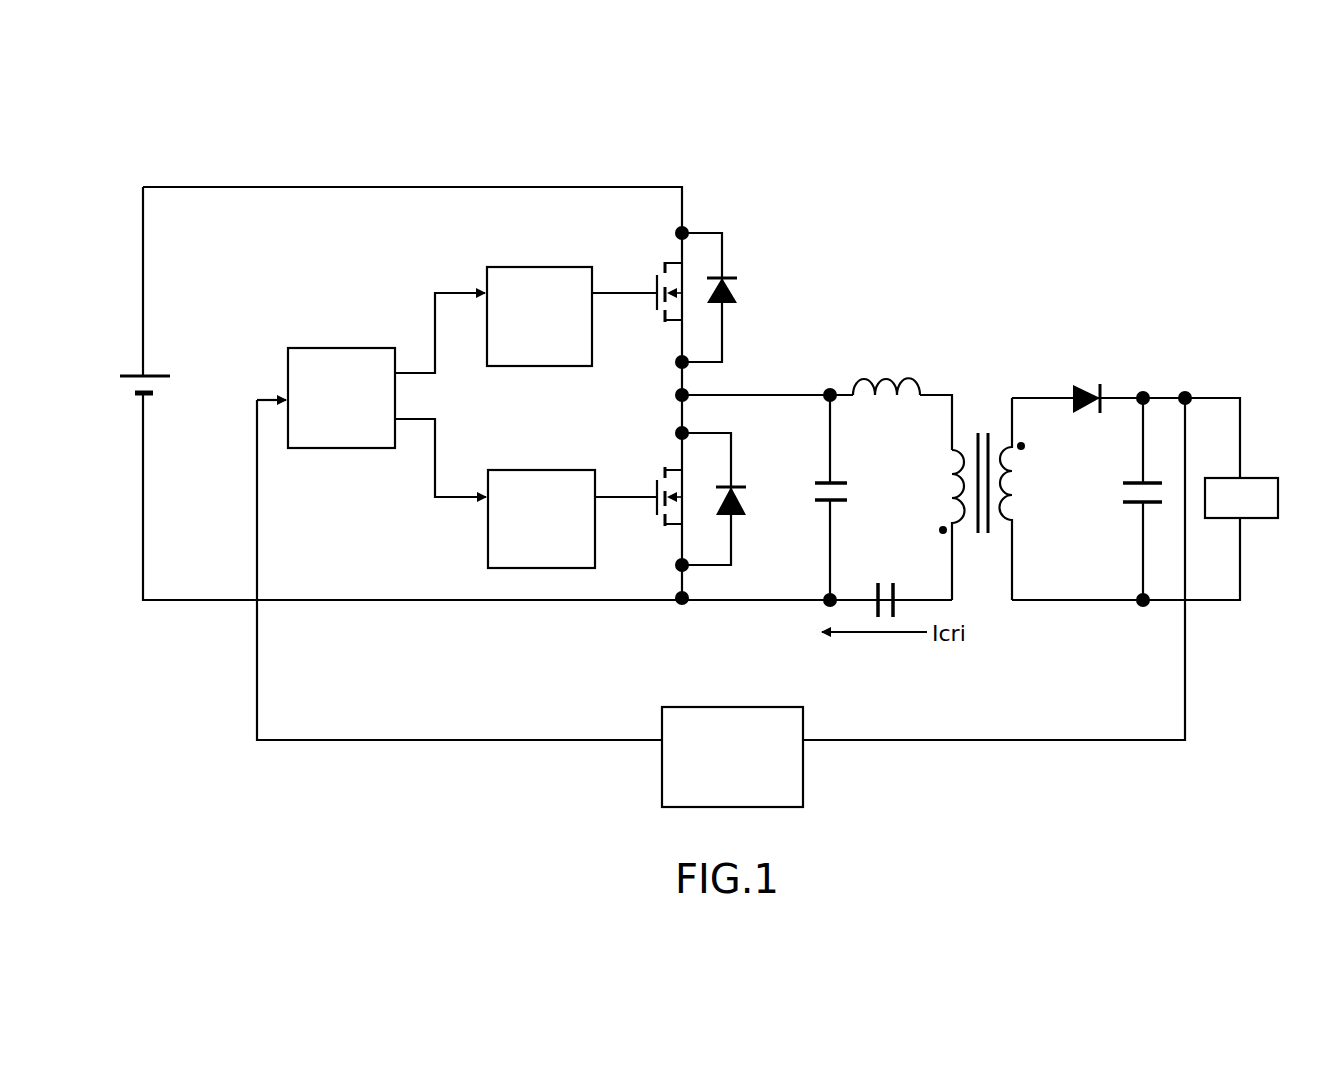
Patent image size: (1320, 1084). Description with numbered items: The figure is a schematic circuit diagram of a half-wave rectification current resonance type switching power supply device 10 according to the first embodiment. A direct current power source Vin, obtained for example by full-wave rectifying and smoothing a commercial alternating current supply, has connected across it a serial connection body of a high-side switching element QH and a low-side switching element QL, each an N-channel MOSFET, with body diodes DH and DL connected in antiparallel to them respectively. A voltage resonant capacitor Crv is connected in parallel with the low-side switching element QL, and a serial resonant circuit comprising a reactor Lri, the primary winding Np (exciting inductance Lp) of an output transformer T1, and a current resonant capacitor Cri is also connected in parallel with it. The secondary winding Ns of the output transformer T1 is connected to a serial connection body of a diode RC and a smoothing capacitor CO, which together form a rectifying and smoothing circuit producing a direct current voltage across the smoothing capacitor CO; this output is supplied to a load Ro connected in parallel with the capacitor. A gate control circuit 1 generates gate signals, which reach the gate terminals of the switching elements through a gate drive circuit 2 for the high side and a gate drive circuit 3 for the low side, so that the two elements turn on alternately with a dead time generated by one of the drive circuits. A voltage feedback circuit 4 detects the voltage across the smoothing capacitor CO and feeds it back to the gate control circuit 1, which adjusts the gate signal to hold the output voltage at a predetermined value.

The gate control circuit 1 is at (338, 348).
The gate drive circuit 2 is at (526, 267).
The gate drive circuit 3 is at (531, 470).
The voltage feedback circuit 4 is at (730, 707).
The half-wave rectification current resonance type switching power supply device 10 is at (1020, 227).
The direct current power source Vin is at (170, 376).
The high-side switching element QH is at (658, 326).
The low-side switching element QL is at (658, 532).
The body diode DH is at (732, 278).
The body diode DL is at (738, 487).
The reactor Lri is at (870, 380).
The voltage resonant capacitor Crv is at (842, 484).
The current resonant capacitor Cri is at (891, 582).
The output transformer T1 is at (972, 467).
The primary winding Np is at (962, 460).
The secondary winding Ns is at (1006, 434).
The exciting inductance Lp is at (950, 469).
The diode RC is at (1084, 384).
The smoothing capacitor CO is at (1126, 504).
The load Ro is at (1266, 478).